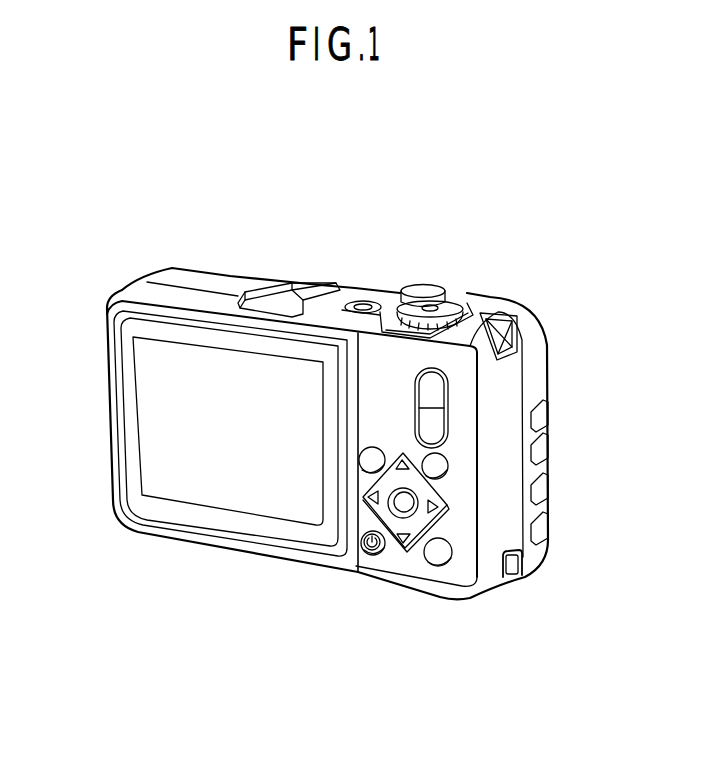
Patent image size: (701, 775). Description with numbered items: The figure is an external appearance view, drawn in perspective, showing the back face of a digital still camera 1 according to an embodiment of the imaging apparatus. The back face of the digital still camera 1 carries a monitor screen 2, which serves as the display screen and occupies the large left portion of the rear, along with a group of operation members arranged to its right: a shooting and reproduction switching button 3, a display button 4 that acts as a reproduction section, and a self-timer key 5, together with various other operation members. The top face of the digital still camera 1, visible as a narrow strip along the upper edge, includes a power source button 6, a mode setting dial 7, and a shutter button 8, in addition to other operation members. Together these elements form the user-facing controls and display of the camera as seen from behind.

The digital still camera 1 is at (288, 268).
The monitor screen 2 is at (188, 413).
The shooting and reproduction switching button 3 is at (437, 470).
The display button 4 is at (435, 553).
The self-timer key 5 is at (373, 556).
The power source button 6 is at (364, 303).
The mode setting dial 7 is at (455, 302).
The shutter button 8 is at (422, 285).